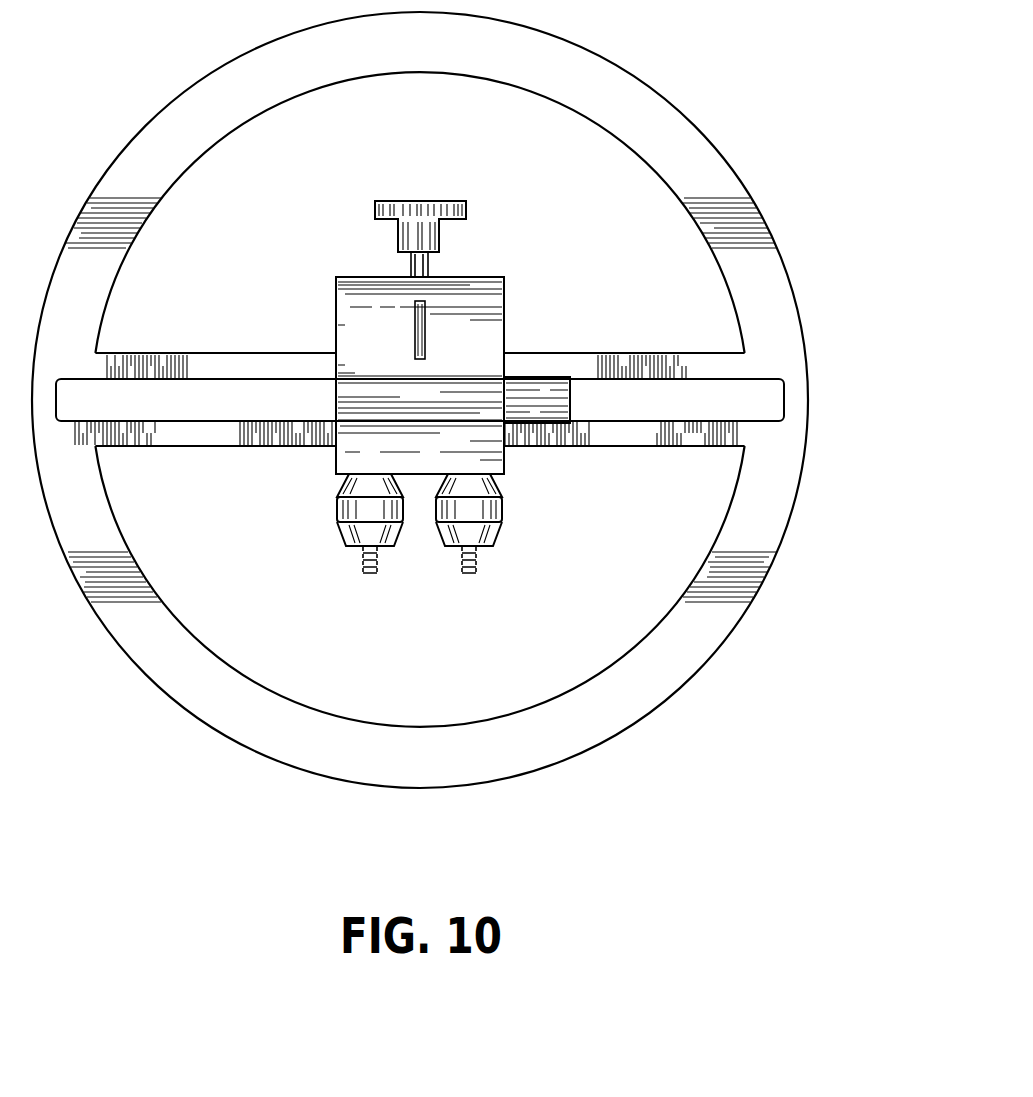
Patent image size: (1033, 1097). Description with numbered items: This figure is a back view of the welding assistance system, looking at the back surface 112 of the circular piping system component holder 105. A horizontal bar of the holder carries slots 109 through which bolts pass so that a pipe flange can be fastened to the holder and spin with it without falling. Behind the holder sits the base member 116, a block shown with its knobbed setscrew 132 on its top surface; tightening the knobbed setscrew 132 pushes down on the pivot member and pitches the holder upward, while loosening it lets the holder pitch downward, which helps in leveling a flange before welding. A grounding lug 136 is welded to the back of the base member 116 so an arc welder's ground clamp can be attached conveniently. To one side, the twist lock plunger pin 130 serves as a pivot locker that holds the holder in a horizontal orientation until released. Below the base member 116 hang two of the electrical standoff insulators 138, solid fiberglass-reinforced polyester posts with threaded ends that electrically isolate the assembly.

The piping system component holder 105 is at (628, 97).
The back surface 112 is at (713, 173).
The slots 109 is at (234, 400).
The base member 116 is at (347, 322).
The grounding lug 136 is at (427, 328).
The knobbed setscrew 132 is at (397, 203).
The twist lock plunger pin 130 is at (537, 392).
The electrical standoff insulators 138 is at (338, 508).